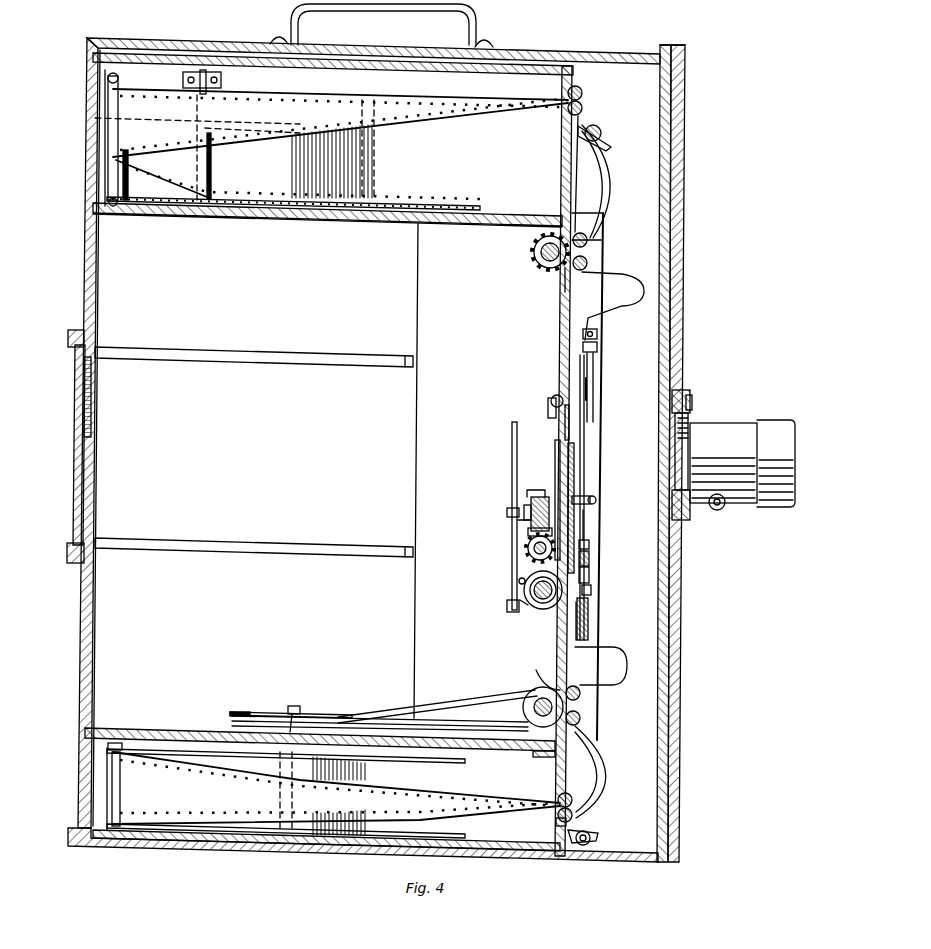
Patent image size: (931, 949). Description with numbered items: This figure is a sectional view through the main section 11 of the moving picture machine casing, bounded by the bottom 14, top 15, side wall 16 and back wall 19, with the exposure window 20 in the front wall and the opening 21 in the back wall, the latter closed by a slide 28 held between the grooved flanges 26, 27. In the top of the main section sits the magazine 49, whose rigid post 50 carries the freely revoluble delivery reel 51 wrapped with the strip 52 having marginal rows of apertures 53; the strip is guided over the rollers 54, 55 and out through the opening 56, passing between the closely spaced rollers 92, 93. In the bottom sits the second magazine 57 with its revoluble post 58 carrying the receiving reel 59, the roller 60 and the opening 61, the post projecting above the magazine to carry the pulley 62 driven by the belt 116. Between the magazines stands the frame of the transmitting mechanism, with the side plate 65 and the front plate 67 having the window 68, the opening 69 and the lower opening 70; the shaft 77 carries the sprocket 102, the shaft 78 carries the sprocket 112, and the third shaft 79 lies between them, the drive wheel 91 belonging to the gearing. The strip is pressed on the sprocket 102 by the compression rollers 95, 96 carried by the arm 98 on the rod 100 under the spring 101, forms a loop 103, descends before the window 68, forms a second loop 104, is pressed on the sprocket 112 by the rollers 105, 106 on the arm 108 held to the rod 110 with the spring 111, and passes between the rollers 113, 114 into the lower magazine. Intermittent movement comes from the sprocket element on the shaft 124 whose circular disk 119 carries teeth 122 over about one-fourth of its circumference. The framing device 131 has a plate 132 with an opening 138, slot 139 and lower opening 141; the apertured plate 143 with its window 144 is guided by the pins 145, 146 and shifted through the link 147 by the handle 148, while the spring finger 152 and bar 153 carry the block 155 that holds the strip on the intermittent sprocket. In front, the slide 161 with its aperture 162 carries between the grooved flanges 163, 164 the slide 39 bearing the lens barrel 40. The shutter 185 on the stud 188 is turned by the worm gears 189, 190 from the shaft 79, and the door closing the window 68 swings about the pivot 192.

The main section 11 is at (86, 265).
The bottom 14 is at (241, 849).
The top 15 is at (587, 58).
The side wall 16 is at (663, 222).
The back wall 19 is at (90, 288).
The exposure window 20 is at (664, 450).
The opening 21 is at (92, 474).
The grooved flange 26 is at (75, 557).
The grooved flange 27 is at (74, 334).
The slide 28 is at (82, 441).
The slide 39 is at (693, 403).
The barrel 40 is at (727, 421).
The magazine 49 is at (268, 217).
The post 50 is at (327, 220).
The delivery reel 51 is at (418, 204).
The strip 52 is at (347, 106).
The apertures 53 is at (448, 113).
The roller 54 is at (204, 180).
The roller 55 is at (116, 180).
The opening 56 is at (562, 86).
The magazine 57 is at (164, 729).
The post 58 is at (292, 707).
The reel 59 is at (467, 834).
The roller 60 is at (118, 745).
The opening 61 is at (560, 817).
The pulley 62 is at (231, 711).
The side plate 65 is at (431, 298).
The front plate 67 is at (563, 304).
The window 68 is at (551, 407).
The opening 69 is at (560, 275).
The opening 70 is at (547, 680).
The shaft 77 is at (538, 253).
The shaft 78 is at (534, 699).
The shaft 79 is at (534, 548).
The drive wheel 91 is at (775, 485).
The roller 92 is at (582, 89).
The roller 93 is at (582, 108).
The compression roller 95 is at (590, 238).
The compression roller 96 is at (588, 268).
The arm 98 is at (611, 177).
The rod 100 is at (603, 131).
The spring 101 is at (612, 146).
The sprocket 102 is at (530, 248).
The loop 103 is at (640, 297).
The loop 104 is at (629, 667).
The compression roller 105 is at (582, 693).
The compression roller 106 is at (582, 718).
The arm 108 is at (602, 764).
The rod 110 is at (592, 838).
The spring 111 is at (597, 832).
The sprocket 112 is at (520, 711).
The roller 113 is at (560, 793).
The roller 114 is at (560, 806).
The belt 116 is at (405, 707).
The circular disk 119 is at (538, 573).
The teeth 122 is at (523, 602).
The shaft 124 is at (538, 602).
The framing device 131 is at (590, 548).
The plate 132 is at (591, 558).
The opening 138 is at (586, 457).
The slot 139 is at (584, 386).
The opening 141 is at (555, 443).
The plate 143 is at (576, 466).
The window 144 is at (565, 429).
The pin 145 is at (596, 499).
The pin 146 is at (599, 356).
The link 147 is at (599, 343).
The handle 148 is at (596, 370).
The spring finger 152 is at (590, 615).
The bar 153 is at (592, 589).
The block 155 is at (590, 601).
The slide 161 is at (686, 195).
The aperture 162 is at (674, 440).
The grooved flange 163 is at (690, 521).
The grooved flange 164 is at (692, 398).
The shutter 185 is at (511, 445).
The stud 188 is at (507, 512).
The worm gear 189 is at (540, 497).
The worm gear 190 is at (531, 531).
The pivot 192 is at (550, 396).